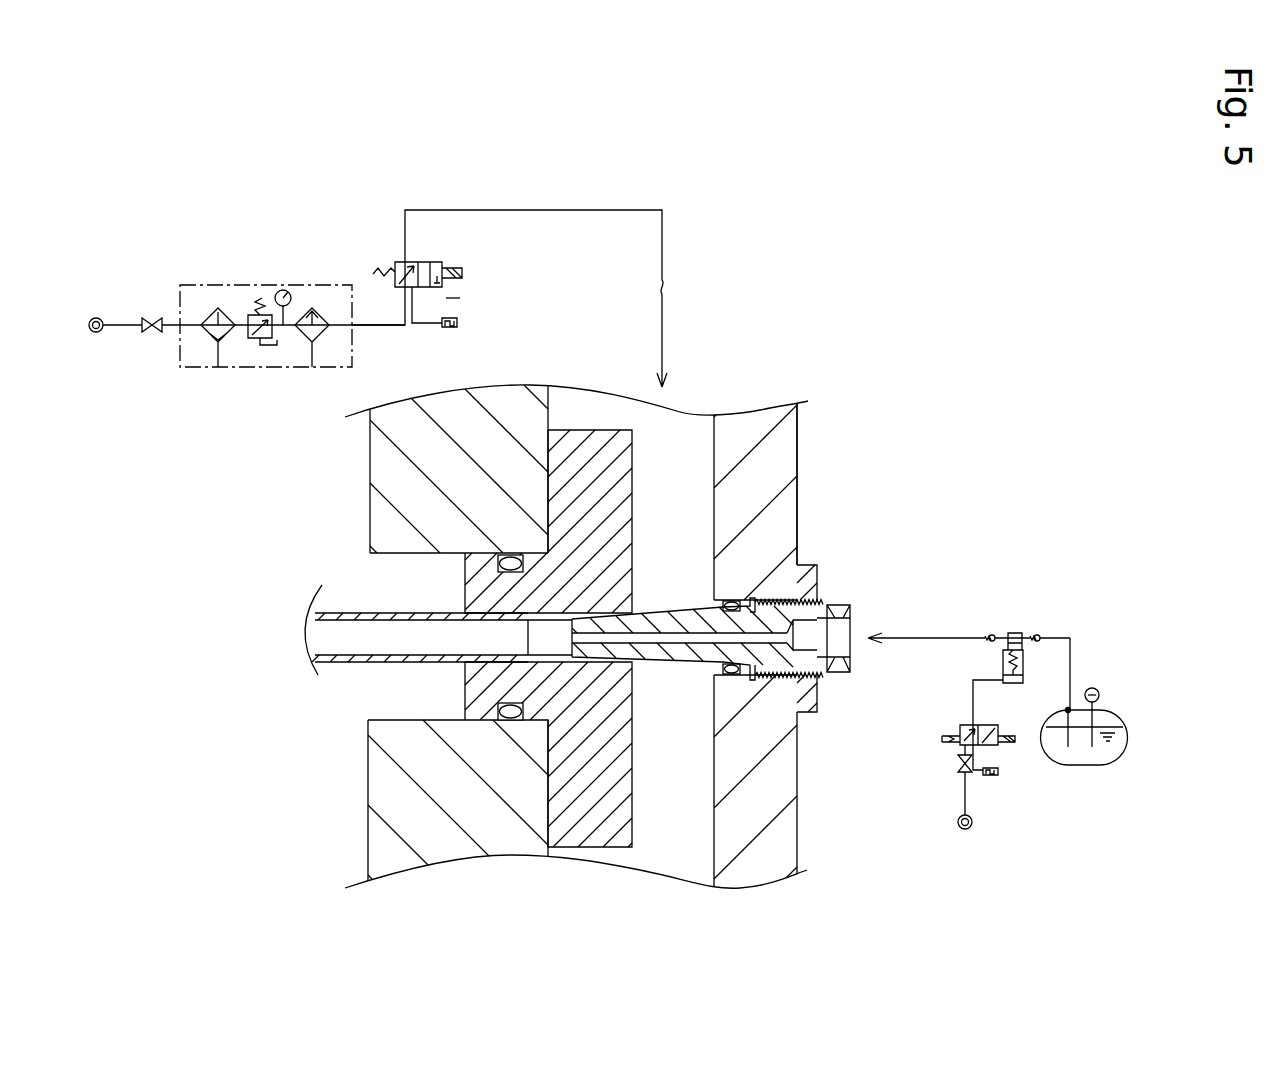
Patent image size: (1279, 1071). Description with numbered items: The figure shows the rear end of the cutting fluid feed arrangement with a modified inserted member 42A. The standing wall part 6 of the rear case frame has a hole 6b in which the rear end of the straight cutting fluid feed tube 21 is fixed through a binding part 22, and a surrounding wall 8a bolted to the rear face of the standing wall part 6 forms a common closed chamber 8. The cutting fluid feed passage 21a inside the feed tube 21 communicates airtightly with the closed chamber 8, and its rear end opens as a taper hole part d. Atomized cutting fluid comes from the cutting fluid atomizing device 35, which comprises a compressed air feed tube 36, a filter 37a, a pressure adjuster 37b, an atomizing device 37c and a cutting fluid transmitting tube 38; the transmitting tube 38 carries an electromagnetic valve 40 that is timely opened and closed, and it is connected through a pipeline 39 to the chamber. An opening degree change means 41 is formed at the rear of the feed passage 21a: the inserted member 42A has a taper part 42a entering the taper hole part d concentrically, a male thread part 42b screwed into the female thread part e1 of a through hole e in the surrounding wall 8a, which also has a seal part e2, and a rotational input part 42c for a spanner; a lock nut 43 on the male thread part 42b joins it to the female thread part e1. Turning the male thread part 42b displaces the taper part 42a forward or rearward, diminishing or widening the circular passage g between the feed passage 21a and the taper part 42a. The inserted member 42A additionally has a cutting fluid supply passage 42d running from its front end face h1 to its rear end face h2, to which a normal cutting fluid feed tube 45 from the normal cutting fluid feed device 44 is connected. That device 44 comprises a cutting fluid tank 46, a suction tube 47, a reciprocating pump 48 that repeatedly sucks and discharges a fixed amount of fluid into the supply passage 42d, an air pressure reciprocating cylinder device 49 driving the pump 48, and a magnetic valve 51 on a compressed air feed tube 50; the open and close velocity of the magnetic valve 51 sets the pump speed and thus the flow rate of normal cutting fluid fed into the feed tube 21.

The standing wall part 6 is at (373, 842).
The hole 6b is at (306, 742).
The closed chamber 8 is at (700, 423).
The surrounding wall 8a is at (800, 452).
The cutting fluid feed tube 21 is at (355, 613).
The cutting fluid feed passage 21a is at (425, 630).
The binding part 22 is at (632, 830).
The cutting fluid atomizing device 35 is at (299, 285).
The compressed air feed tube 36 is at (118, 320).
The filter 37a is at (208, 306).
The pressure adjuster 37b is at (248, 338).
The atomizing device 37c is at (305, 343).
The cutting fluid transmitting tube 38 is at (383, 327).
The pipeline 39 is at (605, 210).
The electromagnetic valve 40 is at (440, 262).
The opening degree change means 41 is at (874, 565).
The inserted member 42A is at (702, 590).
The taper part 42a is at (640, 610).
The male thread part 42b is at (787, 652).
The rotational input part 42c is at (837, 672).
The cutting fluid supply passage 42d is at (677, 650).
The lock nut 43 is at (810, 563).
The normal cutting fluid feed device 44 is at (1083, 616).
The normal cutting fluid feed tube 45 is at (928, 638).
The cutting fluid tank 46 is at (1093, 765).
The suction tube 47 is at (1073, 653).
The reciprocating pump 48 is at (1020, 632).
The air pressure reciprocating cylinder device 49 is at (1017, 683).
The compressed air feed tube 50 is at (957, 800).
The magnetic valve 51 is at (968, 725).
The taper hole part d is at (545, 625).
The circular passage g is at (597, 662).
The front end face h1 is at (530, 640).
The rear end face h2 is at (858, 608).
The through hole e is at (860, 745).
The female thread part e1 is at (797, 652).
The seal part e2 is at (805, 657).